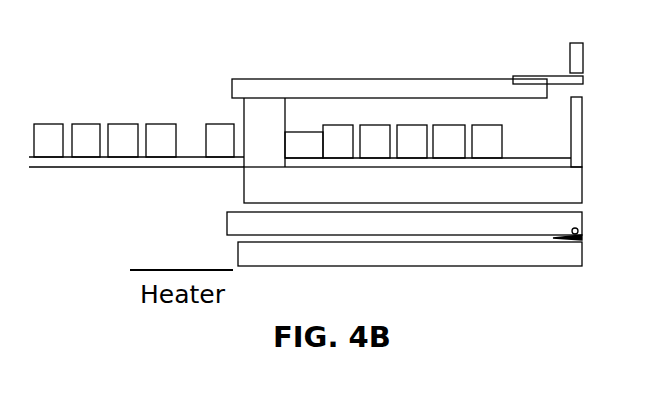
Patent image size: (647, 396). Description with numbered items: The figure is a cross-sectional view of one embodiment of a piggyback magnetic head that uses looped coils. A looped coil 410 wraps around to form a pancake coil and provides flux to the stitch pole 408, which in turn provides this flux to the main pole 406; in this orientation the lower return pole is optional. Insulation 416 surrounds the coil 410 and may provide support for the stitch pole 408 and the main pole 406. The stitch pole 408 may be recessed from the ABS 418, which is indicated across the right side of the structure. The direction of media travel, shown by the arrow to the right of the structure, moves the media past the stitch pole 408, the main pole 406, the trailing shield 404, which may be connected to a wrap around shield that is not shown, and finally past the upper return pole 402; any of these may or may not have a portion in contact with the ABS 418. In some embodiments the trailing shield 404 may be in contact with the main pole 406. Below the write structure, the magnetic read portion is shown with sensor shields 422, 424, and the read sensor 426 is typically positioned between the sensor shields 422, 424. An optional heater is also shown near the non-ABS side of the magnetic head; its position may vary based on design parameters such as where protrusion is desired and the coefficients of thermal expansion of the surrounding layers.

The upper return pole 402 is at (583, 56).
The trailing shield 404 is at (583, 137).
The main pole 406 is at (548, 76).
The stitch pole 408 is at (418, 79).
The looped coil 410 is at (485, 125).
The insulation 416 is at (462, 197).
The ABS 418 is at (590, 185).
The sensor shield 422 is at (227, 224).
The sensor shield 424 is at (238, 248).
The read sensor 426 is at (578, 233).